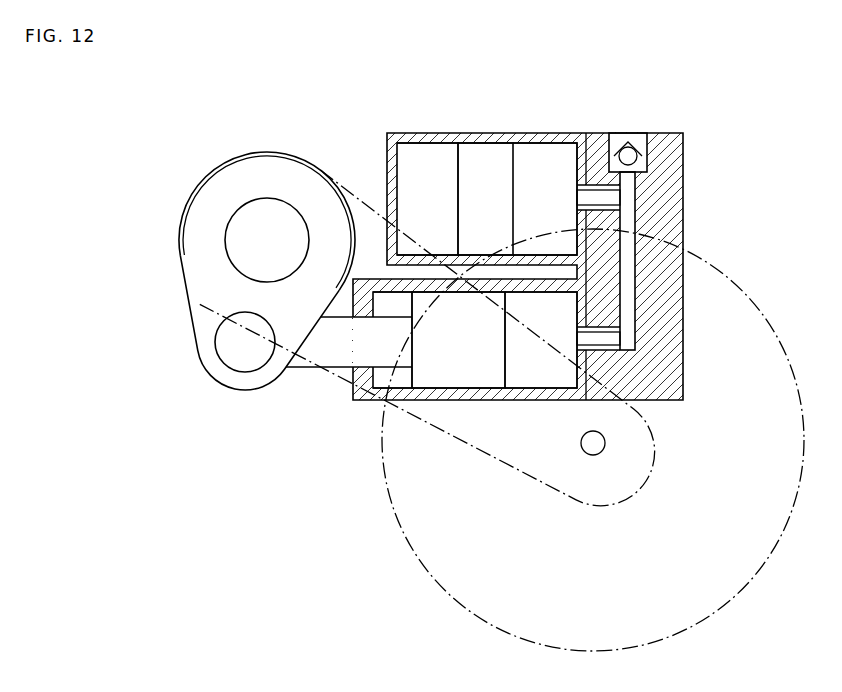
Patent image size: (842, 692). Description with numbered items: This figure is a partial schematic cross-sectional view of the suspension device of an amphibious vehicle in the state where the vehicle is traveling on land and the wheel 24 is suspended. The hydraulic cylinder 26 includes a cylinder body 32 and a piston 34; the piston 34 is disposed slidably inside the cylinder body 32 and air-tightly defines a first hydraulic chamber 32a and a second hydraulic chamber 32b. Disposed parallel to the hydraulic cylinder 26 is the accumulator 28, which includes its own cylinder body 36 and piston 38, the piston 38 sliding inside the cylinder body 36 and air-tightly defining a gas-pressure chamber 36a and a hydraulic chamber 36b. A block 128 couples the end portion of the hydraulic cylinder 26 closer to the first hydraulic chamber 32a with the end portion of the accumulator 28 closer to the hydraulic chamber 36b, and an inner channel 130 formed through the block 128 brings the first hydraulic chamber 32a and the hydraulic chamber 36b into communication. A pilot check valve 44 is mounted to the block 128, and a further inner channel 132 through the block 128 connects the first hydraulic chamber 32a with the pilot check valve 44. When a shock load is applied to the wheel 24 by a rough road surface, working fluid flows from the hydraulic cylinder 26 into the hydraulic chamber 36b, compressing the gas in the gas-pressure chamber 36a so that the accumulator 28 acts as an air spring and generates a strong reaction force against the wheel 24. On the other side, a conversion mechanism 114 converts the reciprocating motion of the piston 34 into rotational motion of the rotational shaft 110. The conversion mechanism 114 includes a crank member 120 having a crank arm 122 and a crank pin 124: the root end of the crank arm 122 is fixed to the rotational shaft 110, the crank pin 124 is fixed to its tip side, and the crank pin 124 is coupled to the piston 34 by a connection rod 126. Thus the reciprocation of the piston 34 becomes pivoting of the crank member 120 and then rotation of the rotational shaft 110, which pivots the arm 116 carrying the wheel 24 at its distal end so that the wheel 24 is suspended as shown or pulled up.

The wheel 24 is at (403, 530).
The hydraulic cylinder 26 is at (511, 395).
The accumulator 28 is at (410, 131).
The cylinder body 32 is at (460, 400).
The first hydraulic chamber 32a is at (555, 400).
The second hydraulic chamber 32b is at (405, 400).
The piston 34 is at (485, 400).
The cylinder body 36 is at (458, 148).
The gas-pressure chamber 36a is at (437, 148).
The hydraulic chamber 36b is at (538, 148).
The piston 38 is at (500, 148).
The pilot check valve 44 is at (635, 133).
The rotational shaft 110 is at (242, 223).
The conversion mechanism 114 is at (290, 162).
The arm 116 is at (507, 465).
The crank member 120 is at (230, 168).
The crank arm 122 is at (200, 243).
The crank pin 124 is at (233, 347).
The connection rod 126 is at (300, 367).
The block 128 is at (683, 153).
The inner channel 130 is at (622, 222).
The inner channel 132 is at (633, 182).